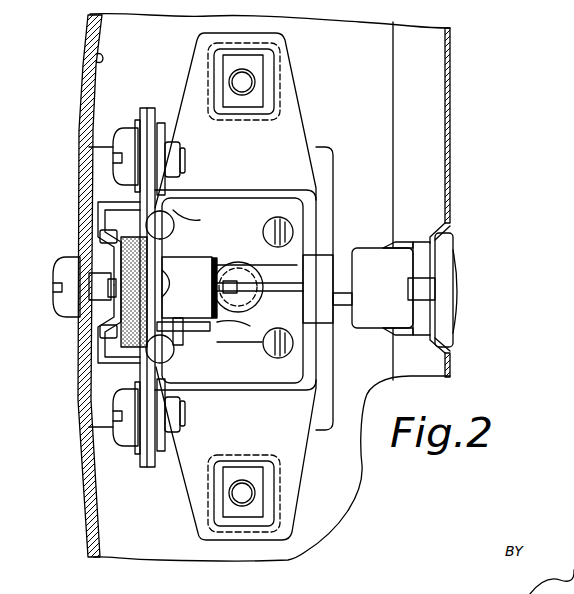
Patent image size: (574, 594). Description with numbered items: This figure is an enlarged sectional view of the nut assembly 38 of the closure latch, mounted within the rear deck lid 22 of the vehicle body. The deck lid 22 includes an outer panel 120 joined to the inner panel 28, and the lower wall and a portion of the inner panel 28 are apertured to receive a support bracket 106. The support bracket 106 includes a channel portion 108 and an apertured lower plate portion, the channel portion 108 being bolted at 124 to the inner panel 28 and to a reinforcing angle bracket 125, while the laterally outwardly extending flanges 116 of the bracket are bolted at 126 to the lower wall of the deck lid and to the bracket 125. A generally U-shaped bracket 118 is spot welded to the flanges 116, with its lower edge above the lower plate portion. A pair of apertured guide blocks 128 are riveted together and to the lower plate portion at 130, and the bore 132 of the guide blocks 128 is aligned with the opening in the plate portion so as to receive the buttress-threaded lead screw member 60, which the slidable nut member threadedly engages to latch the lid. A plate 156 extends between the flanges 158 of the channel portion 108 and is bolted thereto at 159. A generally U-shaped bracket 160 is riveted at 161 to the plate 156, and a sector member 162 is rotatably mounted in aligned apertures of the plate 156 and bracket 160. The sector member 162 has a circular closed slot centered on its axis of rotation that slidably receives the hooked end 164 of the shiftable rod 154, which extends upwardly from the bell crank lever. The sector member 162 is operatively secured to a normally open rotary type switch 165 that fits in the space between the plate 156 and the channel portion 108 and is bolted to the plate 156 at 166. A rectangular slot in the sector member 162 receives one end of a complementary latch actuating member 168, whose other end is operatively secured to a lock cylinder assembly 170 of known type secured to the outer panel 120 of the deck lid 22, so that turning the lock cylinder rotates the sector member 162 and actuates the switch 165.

The rear deck lid 22 is at (456, 69).
The outer panel 120 is at (452, 165).
The inner panel 28 is at (80, 160).
The reinforcing angle bracket 125 is at (96, 58).
The laterally outwardly extending flanges 116 is at (296, 108).
The bolts 126 is at (254, 80).
The U-shaped bracket 118 is at (330, 198).
The nut assembly 38 is at (259, 265).
The guide blocks 128 is at (235, 276).
The flanges of channel portion 158 is at (143, 108).
The bolts 159 is at (186, 158).
The channel portion 108 is at (98, 229).
The support bracket 106 is at (94, 363).
The bolts 124 is at (55, 297).
The rotary type switch 165 is at (117, 344).
The U-shaped bracket 160 is at (192, 257).
The plate 156 is at (168, 218).
The bolts 166 is at (163, 236).
The sector member 162 is at (180, 346).
The rivets 130 is at (293, 231).
The bore 132 is at (240, 264).
The lead screw member 60 is at (246, 300).
The rivets 161 is at (189, 288).
The hooked end 164 is at (178, 333).
The shiftable rod 154 is at (222, 327).
The latch actuating member 168 is at (334, 295).
The lock cylinder assembly 170 is at (447, 288).